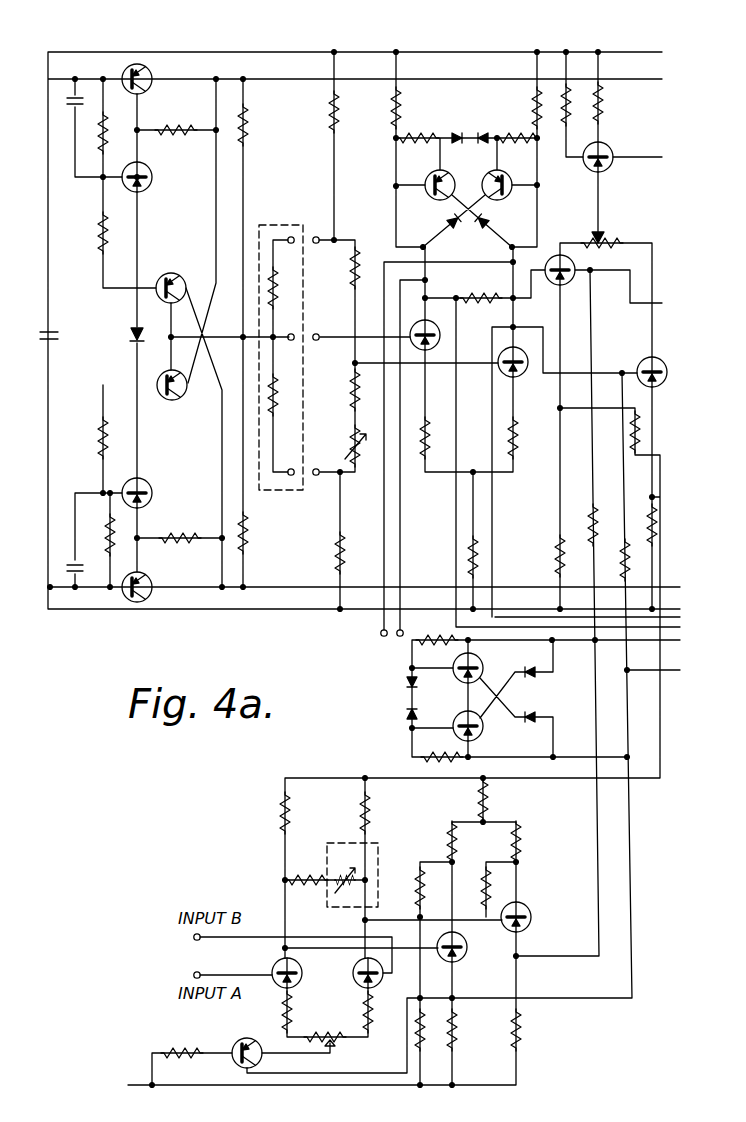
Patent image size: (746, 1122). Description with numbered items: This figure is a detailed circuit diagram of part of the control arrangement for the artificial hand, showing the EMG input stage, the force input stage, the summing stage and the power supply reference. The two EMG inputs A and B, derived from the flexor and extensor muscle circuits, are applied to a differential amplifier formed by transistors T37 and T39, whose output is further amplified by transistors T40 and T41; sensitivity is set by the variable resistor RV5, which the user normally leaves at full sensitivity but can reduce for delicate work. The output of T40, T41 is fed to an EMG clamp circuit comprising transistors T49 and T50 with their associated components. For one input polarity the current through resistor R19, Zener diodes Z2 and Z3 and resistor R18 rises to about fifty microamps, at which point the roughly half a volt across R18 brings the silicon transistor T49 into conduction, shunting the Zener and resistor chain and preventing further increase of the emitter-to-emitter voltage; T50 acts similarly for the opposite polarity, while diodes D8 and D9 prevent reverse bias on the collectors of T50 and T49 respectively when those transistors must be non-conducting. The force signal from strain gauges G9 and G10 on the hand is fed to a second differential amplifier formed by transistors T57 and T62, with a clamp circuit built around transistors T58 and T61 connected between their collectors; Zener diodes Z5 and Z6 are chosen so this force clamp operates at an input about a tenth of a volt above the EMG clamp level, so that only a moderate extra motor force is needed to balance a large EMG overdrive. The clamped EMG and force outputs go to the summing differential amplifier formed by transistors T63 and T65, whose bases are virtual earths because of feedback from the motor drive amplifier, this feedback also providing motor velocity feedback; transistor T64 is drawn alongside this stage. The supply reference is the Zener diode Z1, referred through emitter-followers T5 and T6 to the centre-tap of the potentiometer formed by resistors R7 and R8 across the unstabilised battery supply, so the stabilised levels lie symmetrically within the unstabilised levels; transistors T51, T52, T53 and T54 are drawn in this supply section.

The transistor T51 is at (148, 88).
The transistor T52 is at (148, 188).
The emitter-follower T5 is at (173, 276).
The Zener diode Z1 is at (119, 339).
The emitter-follower T6 is at (174, 396).
The transistor T53 is at (154, 493).
The transistor T54 is at (154, 583).
The resistor R7 is at (258, 125).
The resistor R8 is at (260, 533).
The strain gauge G9 is at (278, 290).
The strain gauge G10 is at (278, 395).
The Zener diode Z5 is at (455, 130).
The Zener diode Z6 is at (484, 130).
The transistor T58 is at (430, 197).
The transistor T61 is at (505, 197).
The transistor T57 is at (432, 322).
The transistor T62 is at (522, 373).
The transistor T63 is at (562, 285).
The transistor T64 is at (613, 174).
The transistor T65 is at (638, 364).
The resistor R18 is at (436, 629).
The resistor R19 is at (441, 747).
The transistor T49 is at (478, 660).
The transistor T50 is at (480, 734).
The Zener diode Z2 is at (405, 680).
The Zener diode Z3 is at (405, 716).
The diode D8 is at (536, 677).
The diode D9 is at (538, 714).
The variable resistor RV5 is at (342, 850).
The transistor T37 is at (296, 986).
The transistor T39 is at (351, 971).
The transistor T40 is at (462, 958).
The transistor T41 is at (528, 927).